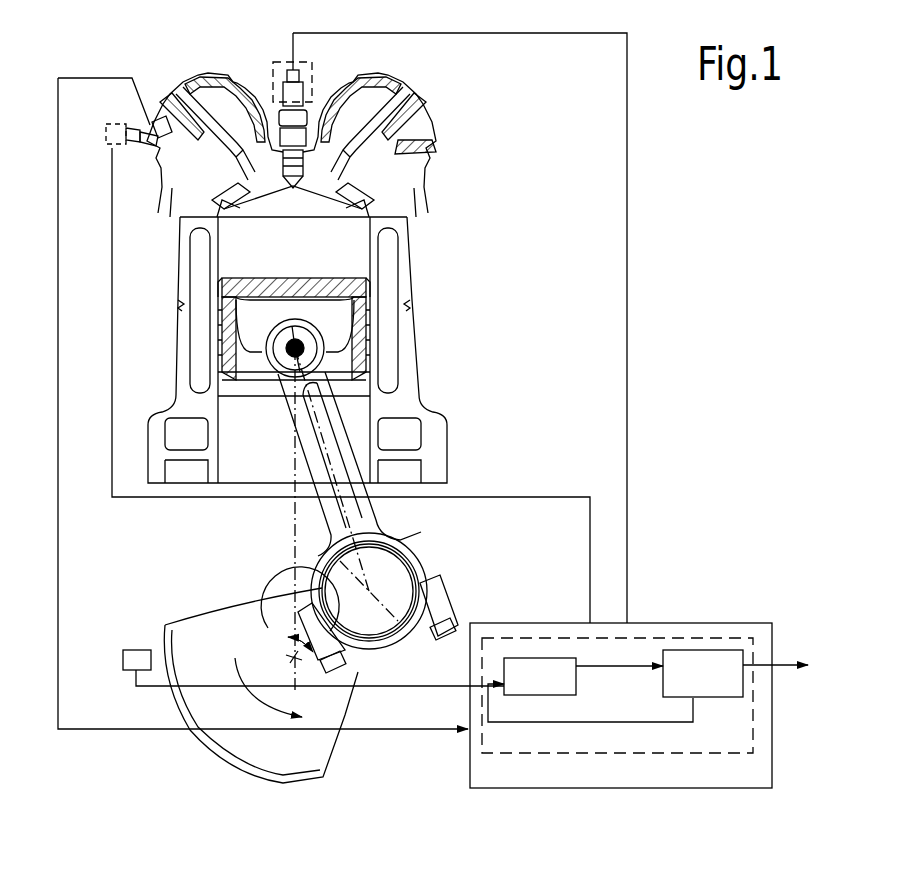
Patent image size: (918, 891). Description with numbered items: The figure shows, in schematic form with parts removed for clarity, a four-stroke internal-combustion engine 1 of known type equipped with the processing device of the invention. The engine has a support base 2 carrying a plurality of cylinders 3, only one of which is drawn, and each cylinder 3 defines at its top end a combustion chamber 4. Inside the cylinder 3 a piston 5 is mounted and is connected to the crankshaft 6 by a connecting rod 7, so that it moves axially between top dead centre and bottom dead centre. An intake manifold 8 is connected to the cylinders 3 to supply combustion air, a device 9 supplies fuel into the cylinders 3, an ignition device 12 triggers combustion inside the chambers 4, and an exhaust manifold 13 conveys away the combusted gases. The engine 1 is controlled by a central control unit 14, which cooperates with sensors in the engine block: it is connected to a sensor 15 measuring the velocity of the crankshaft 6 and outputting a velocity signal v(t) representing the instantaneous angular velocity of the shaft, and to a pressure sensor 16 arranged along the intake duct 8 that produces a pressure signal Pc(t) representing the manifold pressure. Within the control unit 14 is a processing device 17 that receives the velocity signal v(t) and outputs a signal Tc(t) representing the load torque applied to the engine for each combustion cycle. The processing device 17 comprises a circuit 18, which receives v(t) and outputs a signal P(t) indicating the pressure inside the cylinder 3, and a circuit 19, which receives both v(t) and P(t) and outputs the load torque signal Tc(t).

The internal-combustion engine 1 is at (488, 365).
The support base 2 is at (425, 425).
The cylinder 3 is at (338, 255).
The combustion chamber 4 is at (312, 210).
The piston 5 is at (342, 297).
The crankshaft 6 is at (303, 678).
The connecting rod 7 is at (398, 510).
The intake manifold 8 is at (202, 178).
The fuel supply device 9 is at (126, 118).
The ignition device 12 is at (322, 78).
The exhaust manifold 13 is at (410, 146).
The central control unit 14 is at (625, 795).
The crankshaft velocity sensor 15 is at (130, 648).
The pressure sensor 16 is at (168, 116).
The processing device 17 is at (700, 757).
The circuit 18 is at (532, 668).
The circuit 19 is at (690, 668).